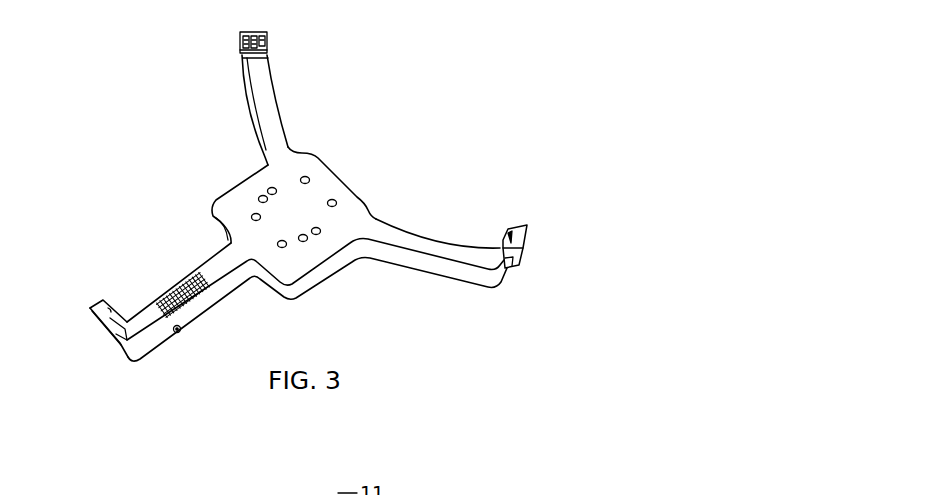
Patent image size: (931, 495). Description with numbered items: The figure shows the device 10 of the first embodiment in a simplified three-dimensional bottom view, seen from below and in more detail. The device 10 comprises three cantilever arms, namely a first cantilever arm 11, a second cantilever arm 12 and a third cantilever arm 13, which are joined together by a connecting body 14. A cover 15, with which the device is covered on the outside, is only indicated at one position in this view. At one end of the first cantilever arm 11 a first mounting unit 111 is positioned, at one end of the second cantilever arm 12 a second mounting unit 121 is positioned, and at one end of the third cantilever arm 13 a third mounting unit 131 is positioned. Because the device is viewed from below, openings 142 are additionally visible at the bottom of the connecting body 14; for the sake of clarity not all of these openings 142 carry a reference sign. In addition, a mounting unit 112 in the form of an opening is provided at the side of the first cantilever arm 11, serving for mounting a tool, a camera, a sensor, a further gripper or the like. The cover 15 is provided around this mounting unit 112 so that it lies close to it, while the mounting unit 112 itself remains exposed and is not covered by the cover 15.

The device 10 is at (517, 87).
The first cantilever arm 11 is at (208, 308).
The second cantilever arm 12 is at (423, 238).
The third cantilever arm 13 is at (278, 97).
The connecting body 14 is at (350, 198).
The cover 15 is at (181, 288).
The first mounting unit 111 is at (90, 309).
The mounting unit 112 is at (181, 331).
The second mounting unit 121 is at (521, 232).
The third mounting unit 131 is at (266, 36).
The openings 142 is at (262, 197).